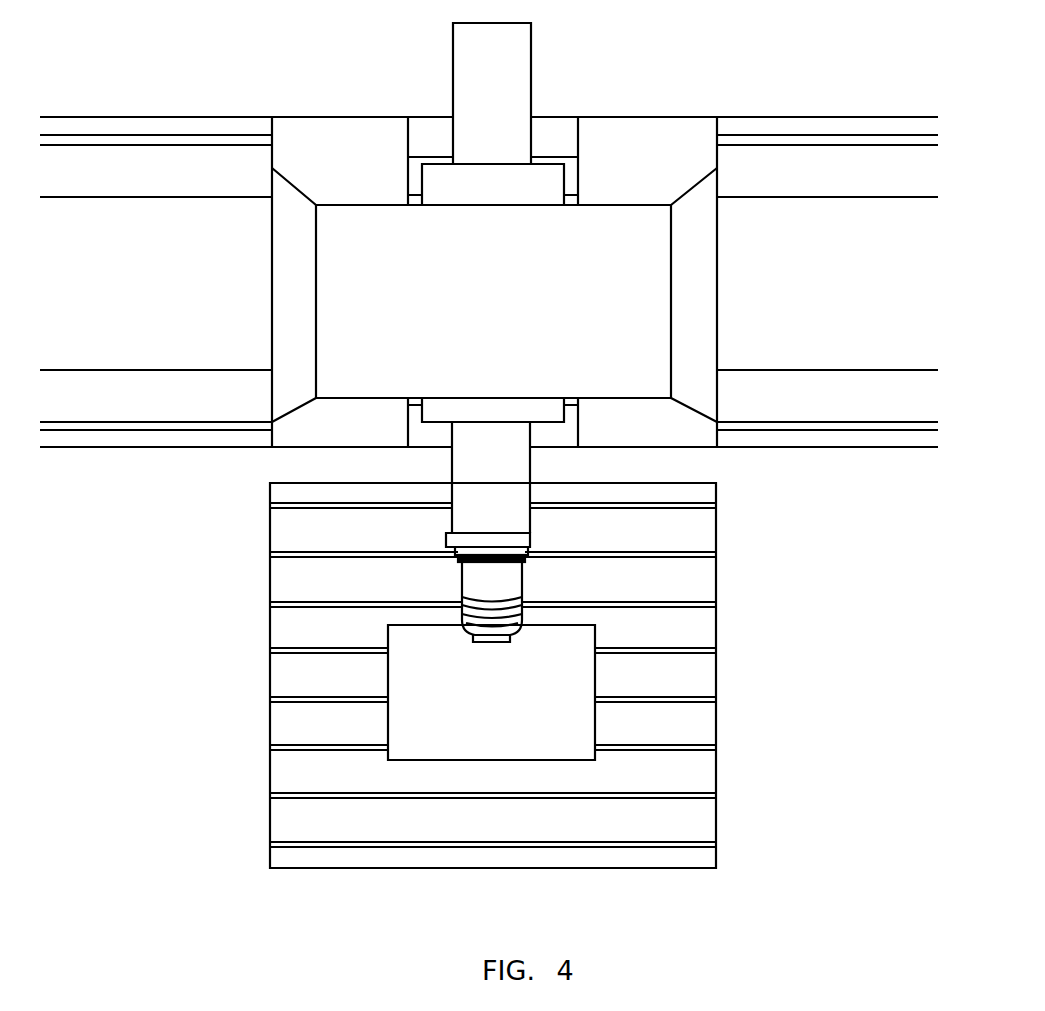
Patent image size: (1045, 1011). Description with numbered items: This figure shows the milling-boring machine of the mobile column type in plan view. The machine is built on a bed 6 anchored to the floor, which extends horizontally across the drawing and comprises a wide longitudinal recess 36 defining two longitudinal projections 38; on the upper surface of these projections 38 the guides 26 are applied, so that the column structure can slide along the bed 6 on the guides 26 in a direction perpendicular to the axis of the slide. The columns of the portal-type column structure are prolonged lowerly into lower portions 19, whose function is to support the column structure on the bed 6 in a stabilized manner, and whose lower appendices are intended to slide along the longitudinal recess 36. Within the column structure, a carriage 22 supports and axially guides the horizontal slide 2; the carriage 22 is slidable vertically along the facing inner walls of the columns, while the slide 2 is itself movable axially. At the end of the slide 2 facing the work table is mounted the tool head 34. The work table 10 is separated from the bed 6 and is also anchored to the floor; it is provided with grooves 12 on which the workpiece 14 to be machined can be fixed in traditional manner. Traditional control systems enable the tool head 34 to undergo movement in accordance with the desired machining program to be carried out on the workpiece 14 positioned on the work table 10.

The horizontal slide 2 is at (495, 468).
The bed 6 is at (840, 115).
The work table 10 is at (647, 532).
The grooves 12 is at (675, 605).
The workpiece 14 is at (457, 730).
The lower portions 19 is at (697, 249).
The carriage 22 is at (549, 184).
The guides 26 is at (905, 142).
The tool head 34 is at (498, 598).
The longitudinal recess 36 is at (755, 318).
The longitudinal projections 38 is at (830, 176).